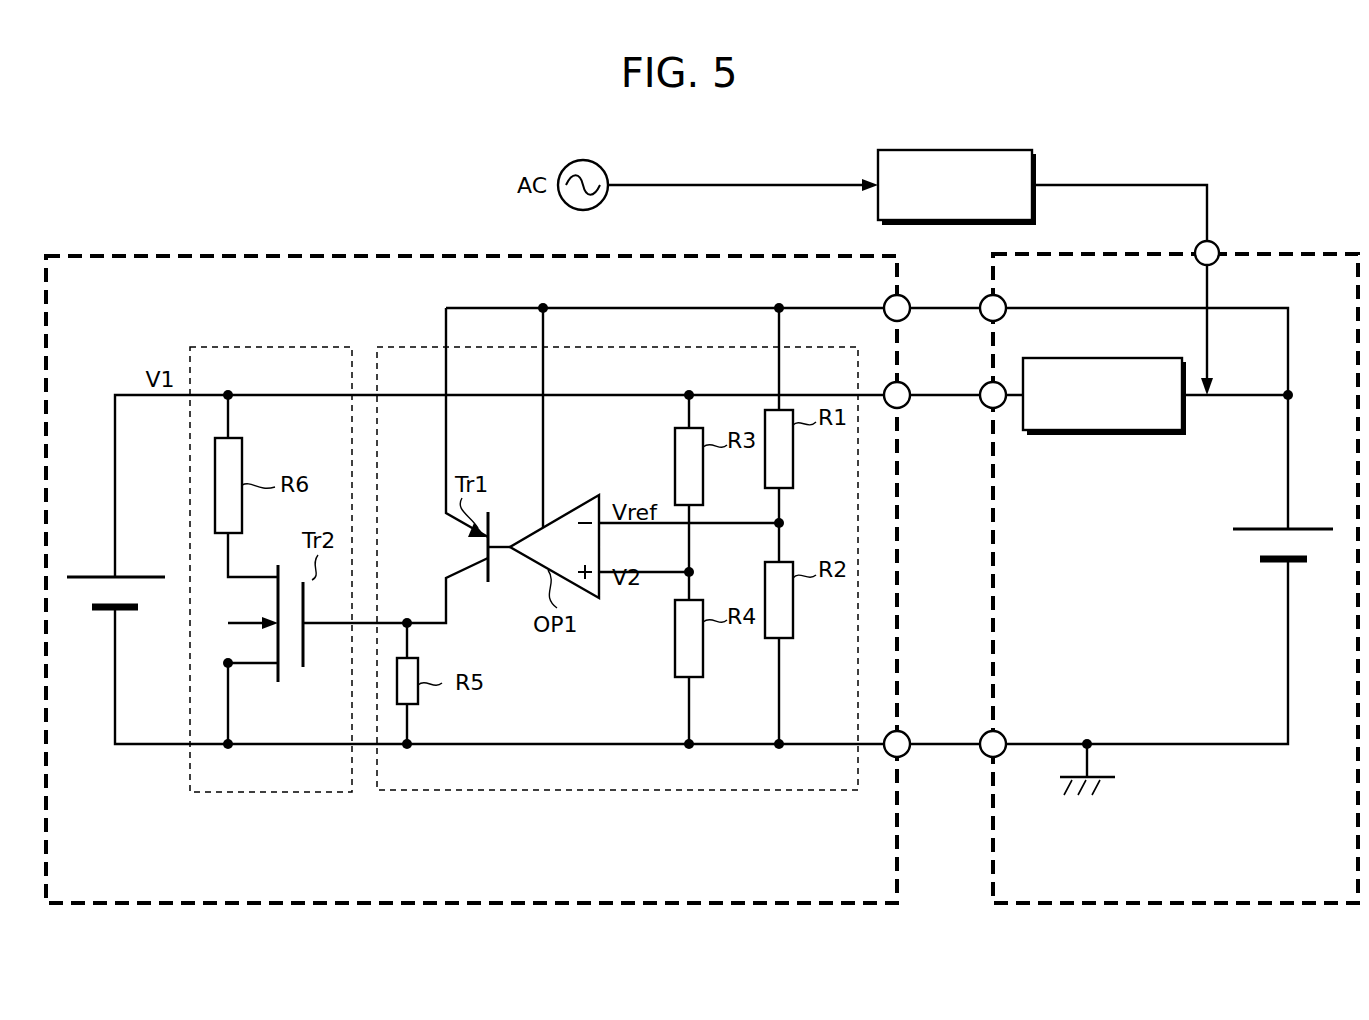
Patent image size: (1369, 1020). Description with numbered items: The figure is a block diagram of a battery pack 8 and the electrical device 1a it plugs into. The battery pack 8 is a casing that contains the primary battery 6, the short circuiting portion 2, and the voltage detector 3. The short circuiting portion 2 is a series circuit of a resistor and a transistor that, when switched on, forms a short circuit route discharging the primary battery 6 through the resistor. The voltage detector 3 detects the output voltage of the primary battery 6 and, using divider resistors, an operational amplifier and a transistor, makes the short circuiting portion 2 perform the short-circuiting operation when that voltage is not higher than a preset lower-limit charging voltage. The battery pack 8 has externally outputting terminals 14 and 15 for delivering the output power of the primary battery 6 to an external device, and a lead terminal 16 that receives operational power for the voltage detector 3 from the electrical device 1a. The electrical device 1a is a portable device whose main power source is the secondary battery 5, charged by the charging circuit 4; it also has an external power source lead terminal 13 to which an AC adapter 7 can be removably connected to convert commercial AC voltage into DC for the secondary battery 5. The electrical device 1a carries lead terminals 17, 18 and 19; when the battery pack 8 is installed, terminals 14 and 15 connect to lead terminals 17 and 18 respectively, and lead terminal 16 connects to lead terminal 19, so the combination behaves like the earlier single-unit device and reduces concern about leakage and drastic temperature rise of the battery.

The electrical device 1a is at (1315, 254).
The short circuiting portion 2 is at (258, 793).
The voltage detector 3 is at (565, 790).
The charging circuit 4 is at (1130, 433).
The secondary battery 5 is at (1250, 548).
The primary battery 6 is at (85, 603).
The AC adapter 7 is at (975, 150).
The battery pack 8 is at (212, 256).
The external power source lead terminal 13 is at (1216, 244).
The externally outputting terminal 14 is at (900, 408).
The externally outputting terminal 15 is at (905, 732).
The lead terminal 16 is at (905, 297).
The lead terminal 17 is at (984, 406).
The lead terminal 18 is at (984, 757).
The lead terminal 19 is at (984, 319).